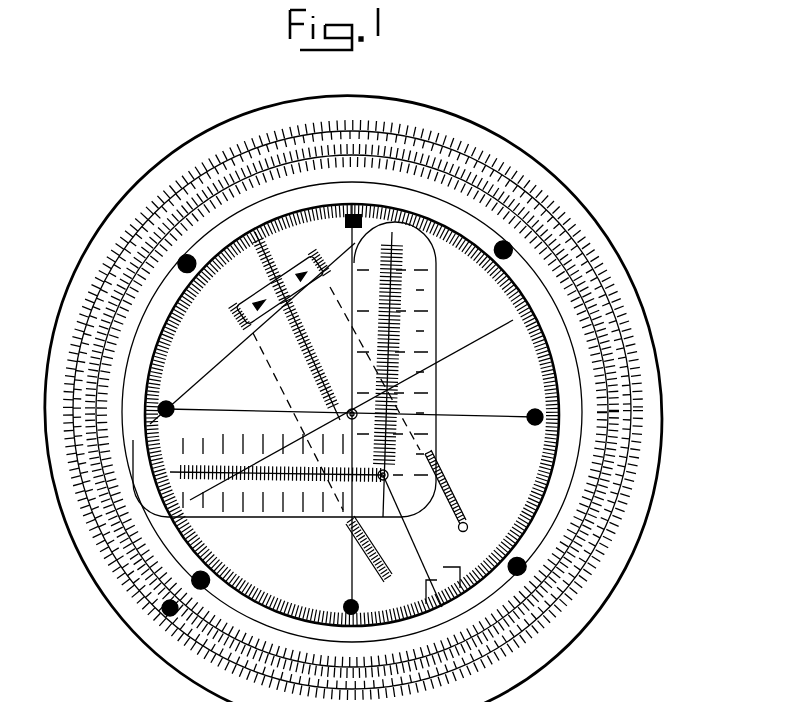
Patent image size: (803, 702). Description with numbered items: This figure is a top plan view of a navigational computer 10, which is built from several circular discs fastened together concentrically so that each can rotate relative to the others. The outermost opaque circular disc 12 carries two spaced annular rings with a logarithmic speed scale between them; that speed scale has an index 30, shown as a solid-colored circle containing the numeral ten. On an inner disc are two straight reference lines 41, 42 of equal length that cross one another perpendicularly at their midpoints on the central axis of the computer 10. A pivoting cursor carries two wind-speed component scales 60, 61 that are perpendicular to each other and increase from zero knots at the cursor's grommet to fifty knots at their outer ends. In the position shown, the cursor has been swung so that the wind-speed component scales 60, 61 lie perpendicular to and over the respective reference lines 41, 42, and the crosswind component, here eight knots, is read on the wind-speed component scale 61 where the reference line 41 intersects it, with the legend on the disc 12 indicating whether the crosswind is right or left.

The computer 10 is at (107, 165).
The circular disc 12 is at (624, 582).
The index 30 is at (148, 603).
The reference line 41 is at (350, 578).
The reference line 42 is at (529, 426).
The wind-speed component scale 60 is at (437, 310).
The wind-speed component scale 61 is at (294, 511).